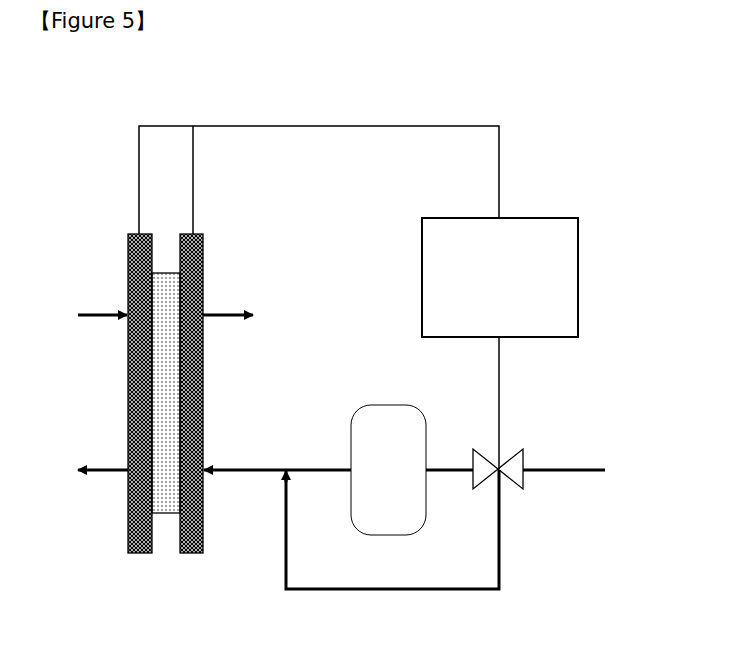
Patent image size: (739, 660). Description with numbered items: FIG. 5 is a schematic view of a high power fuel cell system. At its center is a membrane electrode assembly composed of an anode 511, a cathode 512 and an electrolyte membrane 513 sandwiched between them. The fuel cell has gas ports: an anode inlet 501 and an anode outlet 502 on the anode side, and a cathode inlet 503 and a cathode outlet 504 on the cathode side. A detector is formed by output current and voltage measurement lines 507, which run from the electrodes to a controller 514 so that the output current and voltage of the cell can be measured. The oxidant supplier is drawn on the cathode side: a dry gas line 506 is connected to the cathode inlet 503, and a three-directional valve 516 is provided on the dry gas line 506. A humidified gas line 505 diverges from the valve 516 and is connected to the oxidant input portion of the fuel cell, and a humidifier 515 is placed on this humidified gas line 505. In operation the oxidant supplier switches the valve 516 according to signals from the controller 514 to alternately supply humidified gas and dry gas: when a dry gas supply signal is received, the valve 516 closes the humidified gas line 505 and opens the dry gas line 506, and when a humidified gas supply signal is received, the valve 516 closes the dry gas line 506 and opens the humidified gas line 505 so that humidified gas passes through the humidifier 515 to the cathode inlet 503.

The anode inlet 501 is at (97, 298).
The anode outlet 502 is at (100, 454).
The cathode inlet 503 is at (245, 454).
The cathode outlet 504 is at (229, 298).
The humidified gas line 505 is at (318, 454).
The dry gas line 506 is at (445, 534).
The output current and voltage measurement lines 507 is at (319, 164).
The anode 511 is at (126, 393).
The cathode 512 is at (206, 393).
The electrolyte membrane 513 is at (166, 517).
The controller 514 is at (500, 343).
The humidifier 515 is at (388, 470).
The valve 516 is at (527, 492).